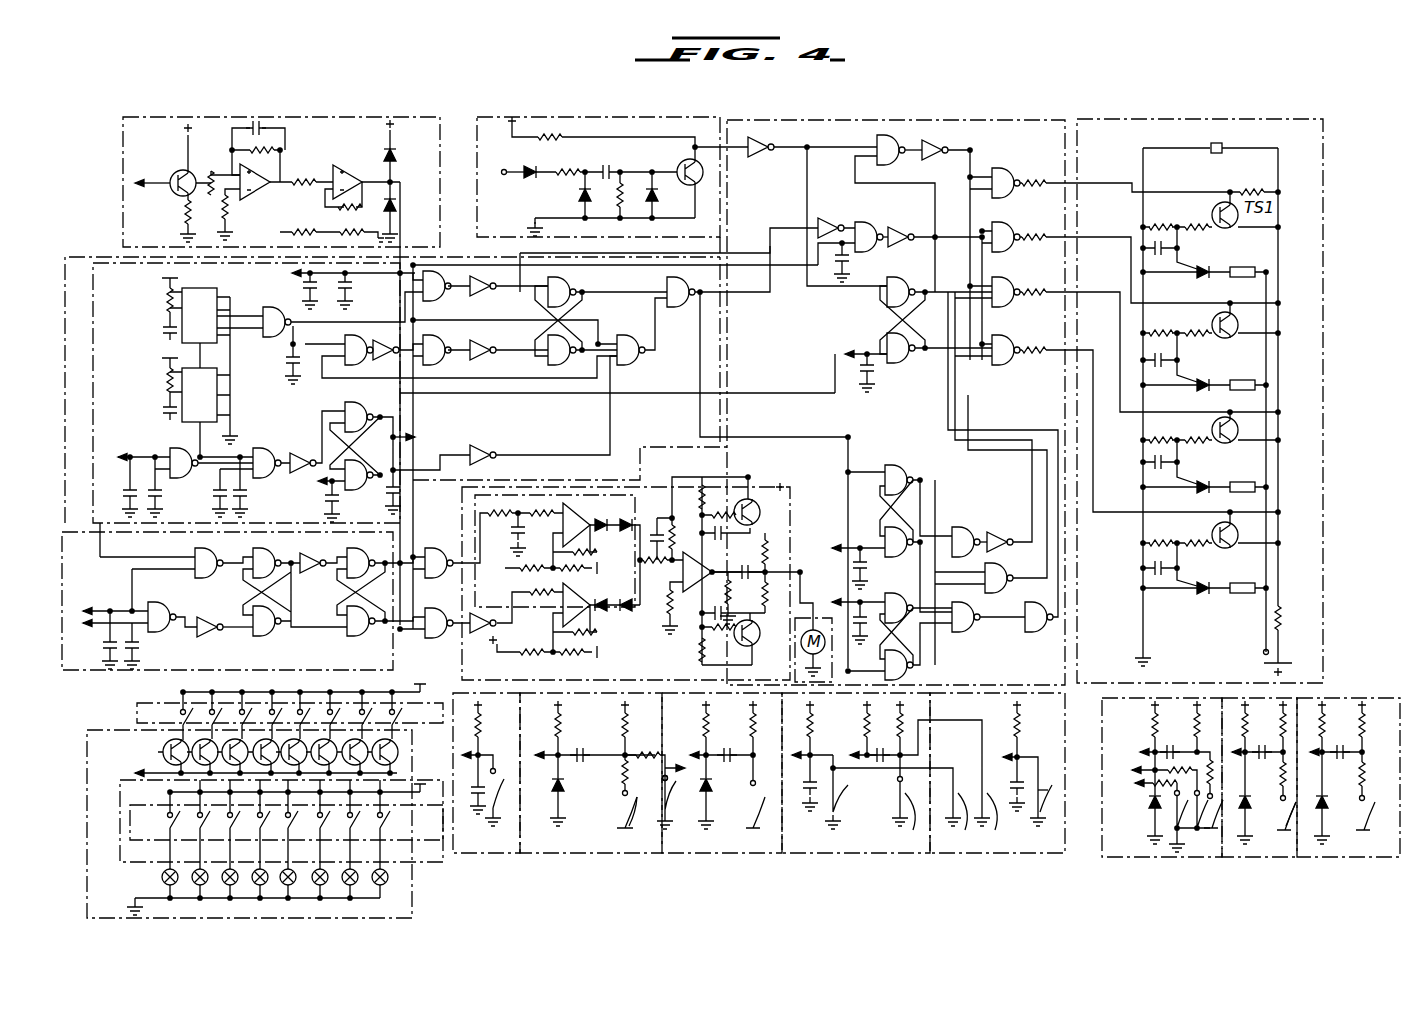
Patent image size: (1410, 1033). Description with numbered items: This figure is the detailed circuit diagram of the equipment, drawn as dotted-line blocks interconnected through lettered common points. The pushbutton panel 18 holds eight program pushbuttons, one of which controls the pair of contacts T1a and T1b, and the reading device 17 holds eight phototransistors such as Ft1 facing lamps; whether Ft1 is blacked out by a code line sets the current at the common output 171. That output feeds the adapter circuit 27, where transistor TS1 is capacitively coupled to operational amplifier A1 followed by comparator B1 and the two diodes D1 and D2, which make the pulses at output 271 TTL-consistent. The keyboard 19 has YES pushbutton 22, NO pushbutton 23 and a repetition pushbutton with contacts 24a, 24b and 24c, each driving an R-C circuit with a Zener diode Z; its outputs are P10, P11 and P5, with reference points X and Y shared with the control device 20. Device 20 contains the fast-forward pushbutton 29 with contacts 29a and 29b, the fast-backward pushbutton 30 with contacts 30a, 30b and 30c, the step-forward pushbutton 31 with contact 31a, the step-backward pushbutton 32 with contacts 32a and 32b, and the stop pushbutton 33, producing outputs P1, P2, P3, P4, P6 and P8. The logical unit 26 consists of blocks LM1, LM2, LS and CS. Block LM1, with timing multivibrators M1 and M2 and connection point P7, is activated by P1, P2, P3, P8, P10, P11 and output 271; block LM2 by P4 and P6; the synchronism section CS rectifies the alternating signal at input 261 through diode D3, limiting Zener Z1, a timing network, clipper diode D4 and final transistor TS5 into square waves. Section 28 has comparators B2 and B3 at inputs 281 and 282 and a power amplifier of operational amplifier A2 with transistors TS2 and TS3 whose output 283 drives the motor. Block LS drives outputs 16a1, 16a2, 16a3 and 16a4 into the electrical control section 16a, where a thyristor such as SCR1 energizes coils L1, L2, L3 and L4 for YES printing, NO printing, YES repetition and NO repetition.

The adapter circuit 27 is at (281, 182).
The common output 171 is at (148, 171).
The transistor TS1 is at (193, 183).
The operational amplifier A1 is at (257, 170).
The comparator B1 is at (345, 165).
The output 271 is at (398, 372).
The diode D2 is at (396, 152).
The diode D1 is at (396, 203).
The synchronism section CS is at (598, 281).
The input 261 is at (502, 162).
The rectifier diode D3 is at (538, 160).
The limiting Zener Z1 is at (579, 190).
The clipper diode D4 is at (664, 195).
The final transistor TS5 is at (673, 163).
The logical section for the printing machine control LS is at (896, 402).
The output point P5 is at (970, 548).
The input 16a1 is at (1078, 184).
The output/input 16a2 is at (1078, 239).
The output/input 16a3 is at (1078, 295).
The output/input 16a4 is at (1105, 347).
The output point P10 is at (491, 512).
The output point P11 is at (160, 465).
The electrical control section 16a is at (1200, 401).
The thyristor SCR1 is at (1207, 255).
The coil L1 is at (1233, 267).
The coil L2 is at (1233, 380).
The coil L3 is at (1233, 482).
The coil L4 is at (1233, 583).
The logical unit 26 is at (246, 393).
The timing multivibrator M2 is at (212, 361).
The timing multivibrator M1 is at (196, 407).
The output point P8 is at (376, 525).
The output point P3 is at (222, 471).
The output point P2 is at (236, 480).
The connection point P7 is at (315, 498).
The output point P1 is at (796, 752).
The first block LM1 is at (624, 428).
The signal process and power section 28 is at (626, 583).
The input 281 is at (502, 533).
The input 282 is at (517, 600).
The comparator B2 is at (551, 538).
The comparator B3 is at (543, 620).
The operational amplifier A2 is at (683, 575).
The transistor TS2 is at (790, 512).
The transistor TS3 is at (760, 641).
The output 283 is at (762, 591).
The second block LM2 is at (237, 596).
The output point P4 is at (1010, 744).
The output point P6 is at (700, 742).
The pushbutton panel 18 is at (281, 782).
The contact T1a is at (282, 711).
The phototransistor Ft1 is at (158, 752).
The reading device 17 is at (249, 824).
The contact T1b is at (281, 824).
The stop pushbutton 33 is at (500, 792).
The control device 20 is at (602, 773).
The pushbutton 31 is at (620, 787).
The contact 31a is at (644, 800).
The pushbutton 32 is at (740, 805).
The contact 32a is at (687, 795).
The contact 32b is at (761, 800).
The pushbutton 29 is at (862, 805).
The contact 29b is at (849, 798).
The contact 29a is at (903, 815).
The pushbutton 30 is at (1040, 800).
The contact 30c is at (954, 821).
The contact 30b is at (996, 821).
The contact 30a is at (1048, 795).
The contact 24a is at (1183, 830).
The reference point Y is at (1152, 775).
The reference point X is at (1144, 784).
The Zener diode Z is at (1150, 806).
The contact 24b is at (1200, 830).
The contact 24c is at (1218, 820).
The keyboard 19 is at (1259, 777).
The pushbutton 22 is at (1292, 812).
The pushbutton 23 is at (1370, 806).